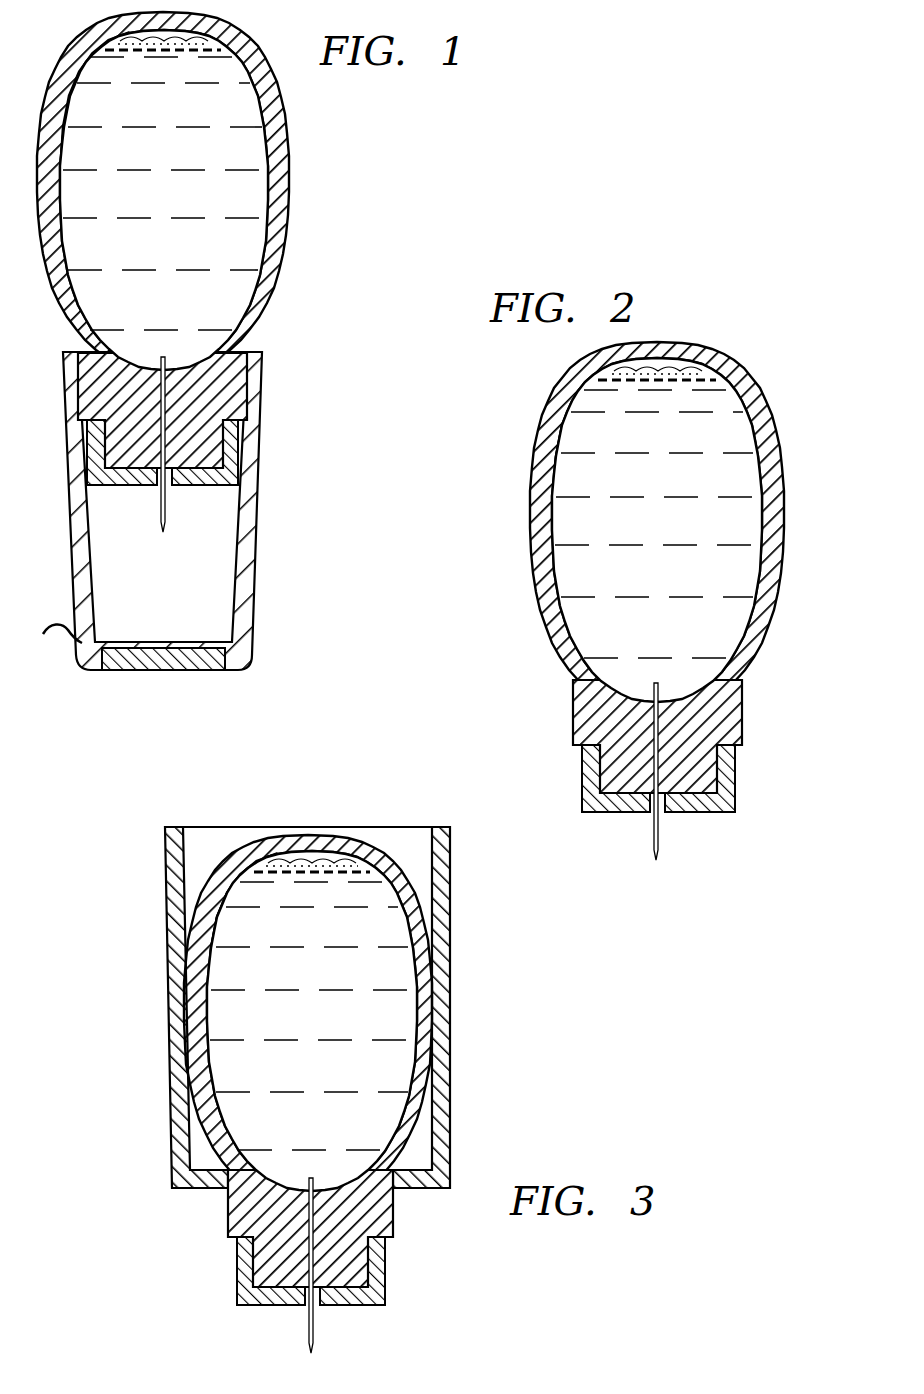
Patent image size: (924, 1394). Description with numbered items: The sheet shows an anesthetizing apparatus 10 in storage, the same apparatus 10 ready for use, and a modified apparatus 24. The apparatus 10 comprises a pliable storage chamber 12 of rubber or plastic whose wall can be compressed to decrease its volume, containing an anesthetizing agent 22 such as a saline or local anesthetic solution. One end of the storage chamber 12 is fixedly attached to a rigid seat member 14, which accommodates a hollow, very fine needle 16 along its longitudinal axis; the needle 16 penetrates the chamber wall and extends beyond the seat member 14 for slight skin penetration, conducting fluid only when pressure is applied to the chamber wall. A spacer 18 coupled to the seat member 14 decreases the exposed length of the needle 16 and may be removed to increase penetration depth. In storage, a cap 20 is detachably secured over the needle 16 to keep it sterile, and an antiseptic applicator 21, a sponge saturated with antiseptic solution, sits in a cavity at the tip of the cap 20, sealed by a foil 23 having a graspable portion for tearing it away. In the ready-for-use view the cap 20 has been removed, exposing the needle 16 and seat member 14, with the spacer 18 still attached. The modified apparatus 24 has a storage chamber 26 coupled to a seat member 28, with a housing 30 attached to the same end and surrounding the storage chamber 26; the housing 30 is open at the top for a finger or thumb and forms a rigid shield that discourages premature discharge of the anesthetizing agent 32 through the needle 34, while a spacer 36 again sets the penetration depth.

In FIG. 1, the apparatus 10 is at (342, 165).
In FIG. 2, the apparatus 10 is at (768, 356).
In FIG. 1, the storage chamber 12 is at (279, 297).
In FIG. 2, the storage chamber 12 is at (772, 627).
In FIG. 1, the seat member 14 is at (249, 388).
In FIG. 2, the seat member 14 is at (730, 713).
In FIG. 1, the needle 16 is at (166, 513).
In FIG. 2, the needle 16 is at (659, 845).
In FIG. 1, the spacer 18 is at (140, 482).
In FIG. 1, the cap 20 is at (256, 500).
In FIG. 1, the antiseptic applicator 21 is at (163, 672).
In FIG. 1, the anesthetizing agent 22 is at (176, 233).
In FIG. 2, the anesthetizing agent 22 is at (670, 560).
In FIG. 1, the foil 23 is at (55, 622).
In FIG. 3, the apparatus 24 is at (88, 848).
In FIG. 3, the storage chamber 26 is at (390, 877).
In FIG. 3, the seat member 28 is at (383, 1205).
In FIG. 3, the housing 30 is at (449, 1112).
In FIG. 3, the anesthetizing agent 32 is at (325, 1053).
In FIG. 3, the needle 34 is at (314, 1338).
In FIG. 3, the spacer 36 is at (387, 1270).